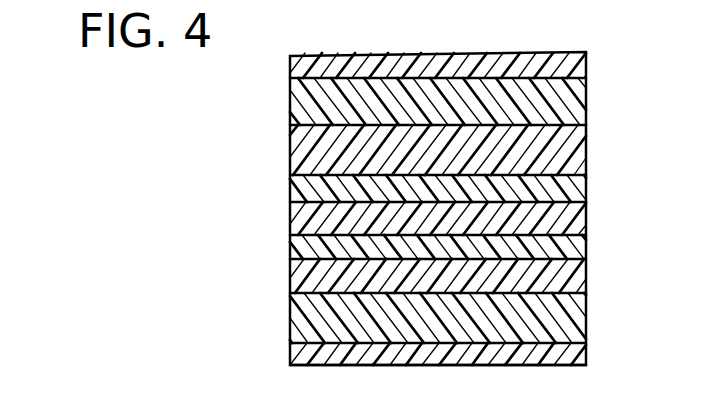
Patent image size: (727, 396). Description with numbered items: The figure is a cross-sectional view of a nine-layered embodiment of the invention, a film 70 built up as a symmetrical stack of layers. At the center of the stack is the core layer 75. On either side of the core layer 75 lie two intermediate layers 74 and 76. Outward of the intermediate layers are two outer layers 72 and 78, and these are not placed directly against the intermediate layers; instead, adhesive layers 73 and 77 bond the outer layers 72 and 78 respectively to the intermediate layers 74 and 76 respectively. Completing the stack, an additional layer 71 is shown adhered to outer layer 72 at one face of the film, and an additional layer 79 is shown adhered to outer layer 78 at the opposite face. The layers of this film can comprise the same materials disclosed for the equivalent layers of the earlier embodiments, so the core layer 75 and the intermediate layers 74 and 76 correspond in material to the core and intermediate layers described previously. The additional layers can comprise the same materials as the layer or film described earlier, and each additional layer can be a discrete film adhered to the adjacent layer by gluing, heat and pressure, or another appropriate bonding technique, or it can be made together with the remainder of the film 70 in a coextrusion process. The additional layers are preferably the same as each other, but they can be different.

The film 70 is at (213, 157).
The additional layer 71 is at (580, 58).
The outer layer 72 is at (298, 105).
The adhesive layer 73 is at (572, 150).
The intermediate layer 74 is at (300, 188).
The core layer 75 is at (575, 208).
The intermediate layer 76 is at (300, 250).
The adhesive layer 77 is at (575, 271).
The outer layer 78 is at (300, 322).
The additional layer 79 is at (582, 346).